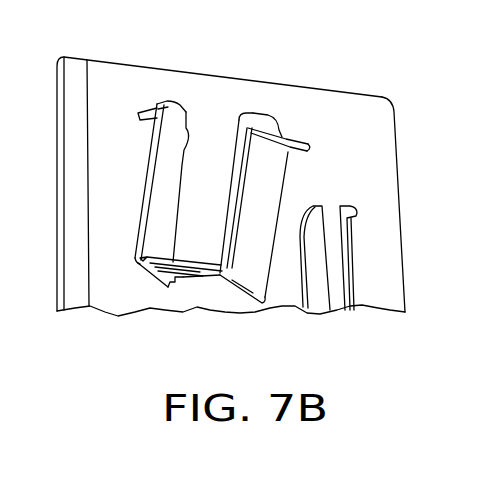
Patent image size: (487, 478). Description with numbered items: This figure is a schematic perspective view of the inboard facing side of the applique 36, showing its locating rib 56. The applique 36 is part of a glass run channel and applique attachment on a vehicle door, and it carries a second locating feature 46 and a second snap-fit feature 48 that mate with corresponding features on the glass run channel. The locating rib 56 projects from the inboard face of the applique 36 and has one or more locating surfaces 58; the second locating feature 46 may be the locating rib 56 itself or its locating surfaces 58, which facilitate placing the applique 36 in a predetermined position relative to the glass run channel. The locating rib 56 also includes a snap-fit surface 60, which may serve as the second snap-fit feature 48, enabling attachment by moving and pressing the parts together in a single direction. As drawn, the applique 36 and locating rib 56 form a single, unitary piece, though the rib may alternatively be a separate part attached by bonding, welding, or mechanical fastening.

The applique 36 is at (372, 173).
The second locating feature 46 is at (227, 194).
The second snap-fit feature 48 is at (180, 283).
The locating rib 56 is at (173, 162).
The locating surfaces 58 is at (140, 118).
The snap-fit surface 60 is at (191, 282).